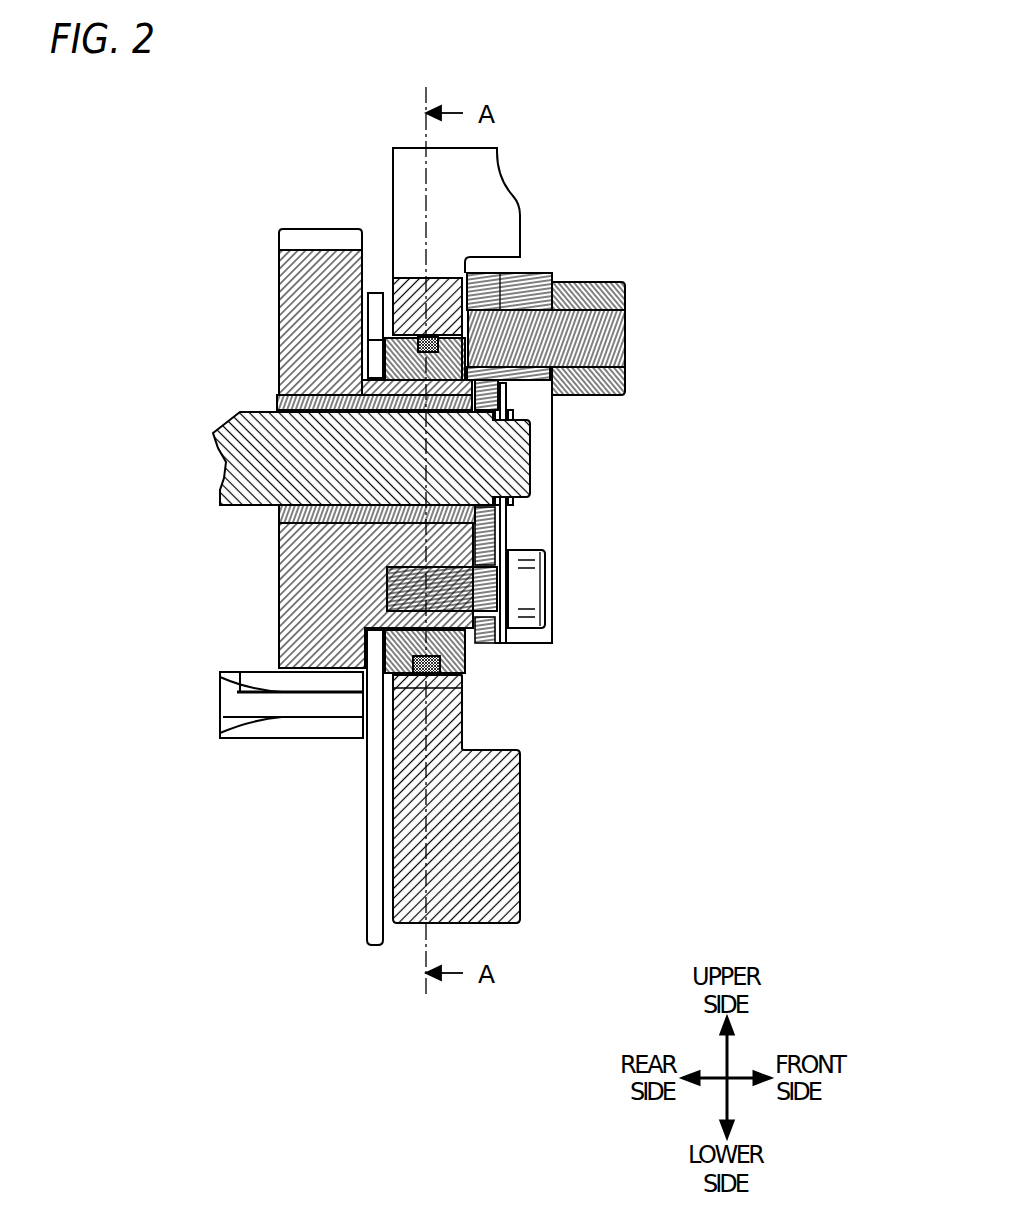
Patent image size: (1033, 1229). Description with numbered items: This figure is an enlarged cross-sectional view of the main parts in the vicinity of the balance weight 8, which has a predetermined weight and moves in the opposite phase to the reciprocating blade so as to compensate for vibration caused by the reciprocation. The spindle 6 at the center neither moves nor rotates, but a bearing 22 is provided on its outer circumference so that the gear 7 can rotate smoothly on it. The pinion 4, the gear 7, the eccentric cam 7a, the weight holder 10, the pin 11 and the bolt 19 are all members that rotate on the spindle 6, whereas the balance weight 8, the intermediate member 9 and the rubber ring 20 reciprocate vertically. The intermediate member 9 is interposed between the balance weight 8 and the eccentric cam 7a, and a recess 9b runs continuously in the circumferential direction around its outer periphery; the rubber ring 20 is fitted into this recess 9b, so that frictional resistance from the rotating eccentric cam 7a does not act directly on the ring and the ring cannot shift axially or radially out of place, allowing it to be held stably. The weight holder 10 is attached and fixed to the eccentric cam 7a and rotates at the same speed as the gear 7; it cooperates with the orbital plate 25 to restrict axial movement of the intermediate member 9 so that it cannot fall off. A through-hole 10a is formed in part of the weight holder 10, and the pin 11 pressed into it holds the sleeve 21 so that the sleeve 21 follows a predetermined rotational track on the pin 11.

The pinion 4 is at (283, 703).
The spindle 6 is at (228, 447).
The gear 7 is at (317, 317).
The eccentric cam 7a is at (447, 548).
The balance weight 8 is at (488, 858).
The intermediate member 9 is at (467, 650).
The recess 9b is at (467, 667).
The weight holder 10 is at (527, 295).
The through-hole 10a is at (498, 308).
The pin 11 is at (590, 332).
The bolt 19 is at (508, 585).
The rubber ring 20 is at (450, 685).
The sleeve 21 is at (607, 383).
The bearing 22 is at (277, 530).
The orbital plate 25 is at (373, 847).